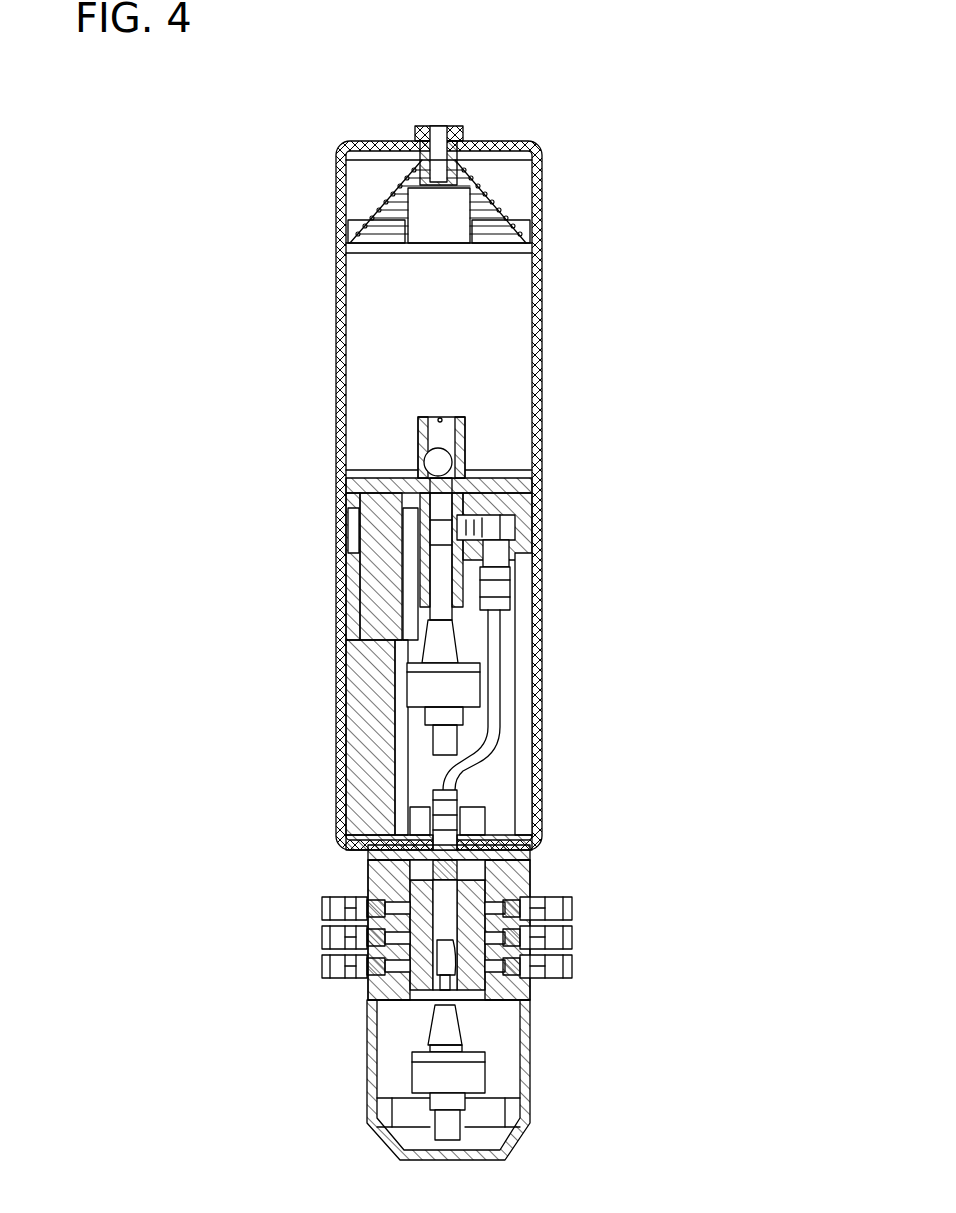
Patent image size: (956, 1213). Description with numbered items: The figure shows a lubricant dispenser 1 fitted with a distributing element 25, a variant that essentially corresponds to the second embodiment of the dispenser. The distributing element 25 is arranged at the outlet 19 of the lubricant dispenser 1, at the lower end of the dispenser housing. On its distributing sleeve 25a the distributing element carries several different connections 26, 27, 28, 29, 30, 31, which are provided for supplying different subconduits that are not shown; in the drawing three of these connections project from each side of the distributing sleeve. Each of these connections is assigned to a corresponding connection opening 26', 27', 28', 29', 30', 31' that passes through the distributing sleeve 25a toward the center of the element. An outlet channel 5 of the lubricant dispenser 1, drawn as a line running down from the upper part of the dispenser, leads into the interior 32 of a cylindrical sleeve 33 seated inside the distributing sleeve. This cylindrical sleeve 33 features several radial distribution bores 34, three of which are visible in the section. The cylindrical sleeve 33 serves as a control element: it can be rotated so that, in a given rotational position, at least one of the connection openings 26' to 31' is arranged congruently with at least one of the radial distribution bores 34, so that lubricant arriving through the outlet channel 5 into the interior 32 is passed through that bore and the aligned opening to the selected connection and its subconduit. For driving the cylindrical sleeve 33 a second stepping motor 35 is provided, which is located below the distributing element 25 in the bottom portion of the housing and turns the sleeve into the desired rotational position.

The lubricant dispenser 1 is at (538, 88).
The outlet channel 5 is at (497, 700).
The outlet 19 is at (470, 852).
The distributing element 25 is at (454, 948).
The distributing sleeve 25a is at (372, 880).
The connection 26 is at (568, 899).
The connection opening 26' is at (599, 875).
The connection 27 is at (568, 935).
The connection opening 27' is at (599, 944).
The connection 28 is at (568, 969).
The connection opening 28' is at (550, 985).
The connection 29 is at (323, 909).
The connection opening 29' is at (345, 886).
The connection 30 is at (325, 944).
The connection opening 30' is at (302, 964).
The connection 31 is at (326, 976).
The connection opening 31' is at (360, 989).
The interior 32 is at (447, 918).
The cylindrical sleeve 33 is at (454, 883).
The radial distribution bore 34 is at (405, 887).
The second stepping motor 35 is at (473, 1072).